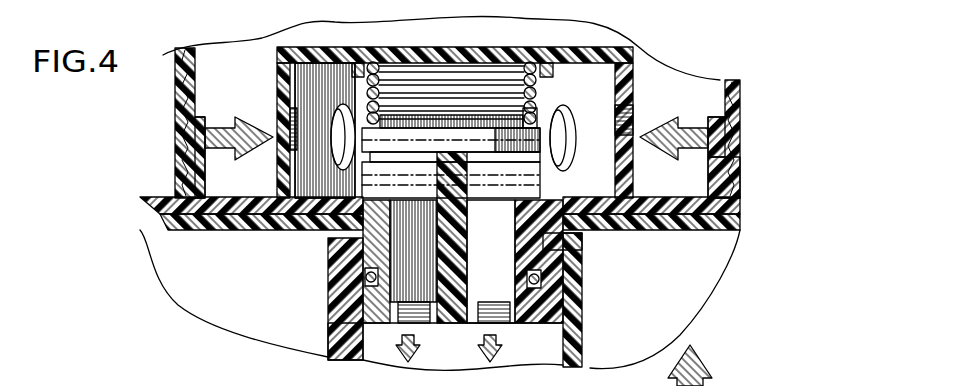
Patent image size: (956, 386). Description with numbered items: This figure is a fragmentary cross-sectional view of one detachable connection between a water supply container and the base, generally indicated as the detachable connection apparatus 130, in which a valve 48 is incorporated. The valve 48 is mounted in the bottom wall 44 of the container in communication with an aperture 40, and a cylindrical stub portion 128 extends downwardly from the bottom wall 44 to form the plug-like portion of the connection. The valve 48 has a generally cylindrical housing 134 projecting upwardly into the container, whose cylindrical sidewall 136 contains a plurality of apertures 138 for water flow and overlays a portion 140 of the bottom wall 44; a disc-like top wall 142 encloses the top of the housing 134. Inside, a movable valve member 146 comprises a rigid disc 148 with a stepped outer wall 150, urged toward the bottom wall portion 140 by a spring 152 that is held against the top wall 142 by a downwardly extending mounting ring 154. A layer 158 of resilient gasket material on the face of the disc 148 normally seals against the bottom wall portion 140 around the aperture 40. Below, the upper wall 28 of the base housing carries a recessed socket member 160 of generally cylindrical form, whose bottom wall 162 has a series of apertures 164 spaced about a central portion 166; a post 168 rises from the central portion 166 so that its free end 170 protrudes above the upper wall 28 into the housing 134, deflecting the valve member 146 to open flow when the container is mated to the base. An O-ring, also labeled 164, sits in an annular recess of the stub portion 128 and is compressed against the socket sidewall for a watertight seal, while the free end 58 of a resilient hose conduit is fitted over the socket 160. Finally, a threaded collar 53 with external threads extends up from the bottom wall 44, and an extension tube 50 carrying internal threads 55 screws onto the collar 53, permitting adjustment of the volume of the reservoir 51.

The upper wall 28 is at (218, 222).
The aperture 40 is at (425, 212).
The bottom wall 44 is at (206, 199).
The valve 48 is at (610, 46).
The extension tube 50 is at (736, 125).
The reservoir 51 is at (178, 62).
The threaded collar 53 is at (740, 155).
The threads 55 is at (730, 82).
The free end 58 is at (577, 318).
The cylindrical stub portion 128 is at (540, 240).
The detachable connection apparatus 130 is at (674, 78).
The housing 134 is at (270, 68).
The cylindrical sidewall 136 is at (284, 100).
The apertures 138 is at (300, 125).
The bottom wall portion 140 is at (342, 194).
The top wall 142 is at (356, 34).
The movable valve member 146 is at (505, 116).
The rigid disc 148 is at (432, 122).
The stepped outer wall 150 is at (526, 70).
The spring 152 is at (385, 75).
The mounting ring 154 is at (570, 66).
The layer of resilient gasket material 158 is at (533, 118).
The recessed socket member 160 is at (350, 268).
The bottom wall 162 is at (362, 326).
The apertures 164 is at (541, 280).
The central portion 166 is at (470, 326).
The post 168 is at (452, 272).
The free end 170 is at (451, 175).